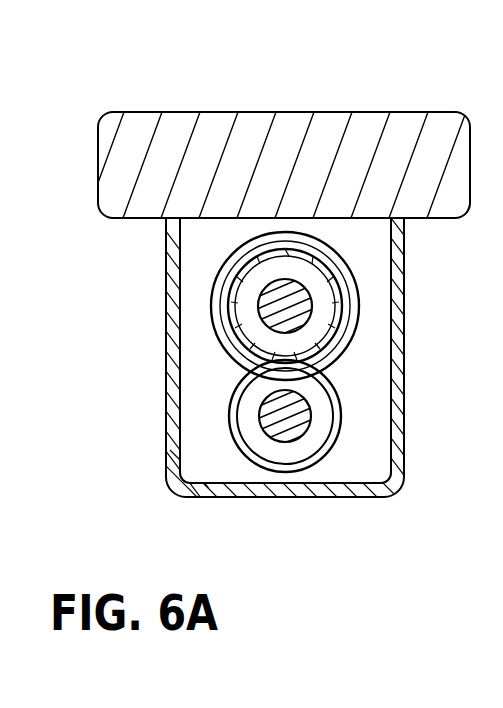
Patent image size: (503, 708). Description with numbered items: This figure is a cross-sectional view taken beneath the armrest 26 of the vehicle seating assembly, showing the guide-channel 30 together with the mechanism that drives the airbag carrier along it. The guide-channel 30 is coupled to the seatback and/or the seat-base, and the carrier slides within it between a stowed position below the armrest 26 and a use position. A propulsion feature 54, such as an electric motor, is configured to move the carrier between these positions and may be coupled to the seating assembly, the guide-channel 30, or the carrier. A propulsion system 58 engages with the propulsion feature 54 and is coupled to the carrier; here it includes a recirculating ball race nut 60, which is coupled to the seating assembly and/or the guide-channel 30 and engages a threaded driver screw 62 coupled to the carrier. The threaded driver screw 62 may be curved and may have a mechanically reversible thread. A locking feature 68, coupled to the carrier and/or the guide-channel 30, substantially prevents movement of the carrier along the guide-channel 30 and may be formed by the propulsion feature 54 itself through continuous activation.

The armrest 26 is at (358, 172).
The guide-channel 30 is at (360, 293).
The propulsion system 58 is at (222, 348).
The recirculating ball race nut 60 is at (252, 302).
The threaded driver screw 62 is at (295, 313).
The propulsion feature 54 is at (226, 417).
The locking feature 68 is at (362, 421).